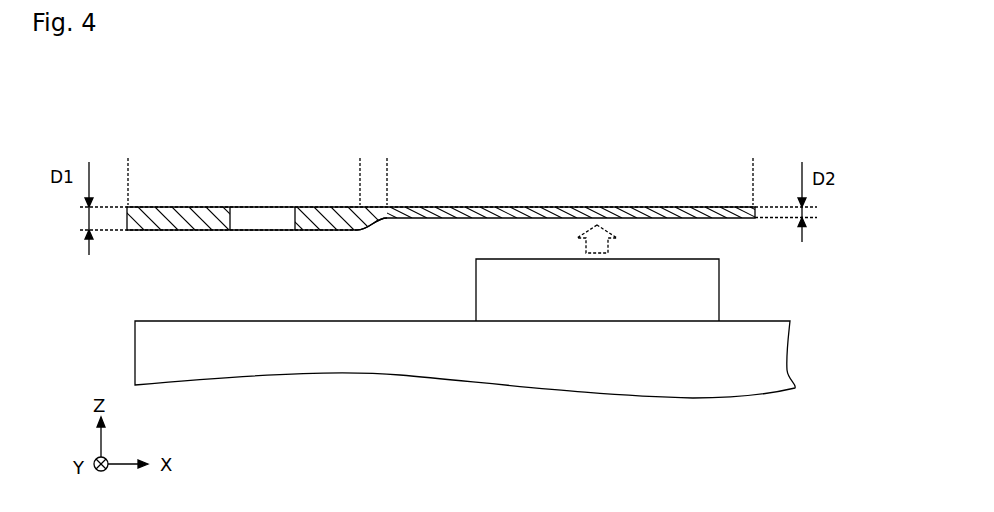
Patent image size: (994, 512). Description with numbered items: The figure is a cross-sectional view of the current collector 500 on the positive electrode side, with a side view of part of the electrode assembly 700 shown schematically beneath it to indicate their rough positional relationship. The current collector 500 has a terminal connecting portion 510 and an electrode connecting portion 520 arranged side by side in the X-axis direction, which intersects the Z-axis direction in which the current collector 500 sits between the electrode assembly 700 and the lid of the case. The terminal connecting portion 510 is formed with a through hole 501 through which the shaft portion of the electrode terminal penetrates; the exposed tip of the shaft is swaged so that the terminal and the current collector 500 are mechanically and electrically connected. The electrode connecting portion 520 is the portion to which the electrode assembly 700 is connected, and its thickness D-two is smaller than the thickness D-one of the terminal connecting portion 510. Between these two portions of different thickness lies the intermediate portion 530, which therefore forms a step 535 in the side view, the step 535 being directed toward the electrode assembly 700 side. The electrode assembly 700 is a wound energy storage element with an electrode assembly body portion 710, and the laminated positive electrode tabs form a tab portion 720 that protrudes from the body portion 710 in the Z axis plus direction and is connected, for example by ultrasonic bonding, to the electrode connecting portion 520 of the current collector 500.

The current collector 500 is at (439, 183).
The terminal connecting portion 510 is at (360, 160).
The electrode connecting portion 520 is at (756, 97).
The intermediate portion 530 is at (387, 160).
The through hole 501 is at (260, 220).
The step 535 is at (394, 226).
The electrode assembly 700 is at (446, 328).
The electrode assembly body portion 710 is at (670, 372).
The tab portion 720 is at (613, 303).